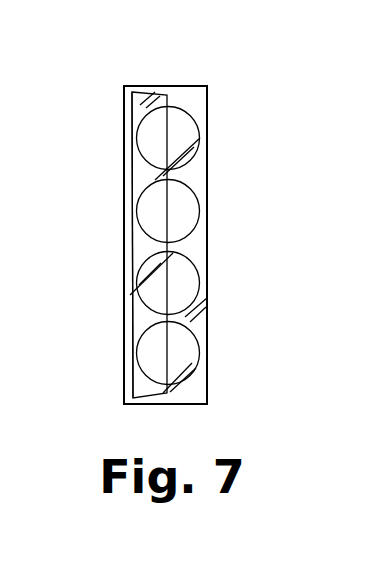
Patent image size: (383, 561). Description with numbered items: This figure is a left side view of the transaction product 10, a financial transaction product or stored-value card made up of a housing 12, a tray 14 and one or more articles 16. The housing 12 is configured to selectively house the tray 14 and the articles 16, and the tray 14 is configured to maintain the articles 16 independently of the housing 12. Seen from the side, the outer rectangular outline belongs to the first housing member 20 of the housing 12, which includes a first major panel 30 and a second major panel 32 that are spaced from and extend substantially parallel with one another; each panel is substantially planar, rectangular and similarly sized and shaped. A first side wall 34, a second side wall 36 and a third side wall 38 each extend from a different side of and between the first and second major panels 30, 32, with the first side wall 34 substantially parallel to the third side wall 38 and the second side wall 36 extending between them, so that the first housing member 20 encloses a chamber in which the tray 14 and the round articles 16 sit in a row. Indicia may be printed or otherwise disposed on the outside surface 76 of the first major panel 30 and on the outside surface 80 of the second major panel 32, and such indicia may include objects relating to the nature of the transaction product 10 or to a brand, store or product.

The transaction product 10 is at (240, 88).
The housing 12 is at (137, 80).
The tray 14 is at (140, 115).
The article 16 is at (185, 213).
The first housing member 20 is at (187, 105).
The first major panel 30 is at (208, 260).
The second major panel 32 is at (124, 282).
The first side wall 34 is at (168, 405).
The second side wall 36 is at (180, 317).
The third side wall 38 is at (182, 86).
The outside surface of first major panel 76 is at (208, 175).
The outside surface of second major panel 80 is at (123, 176).